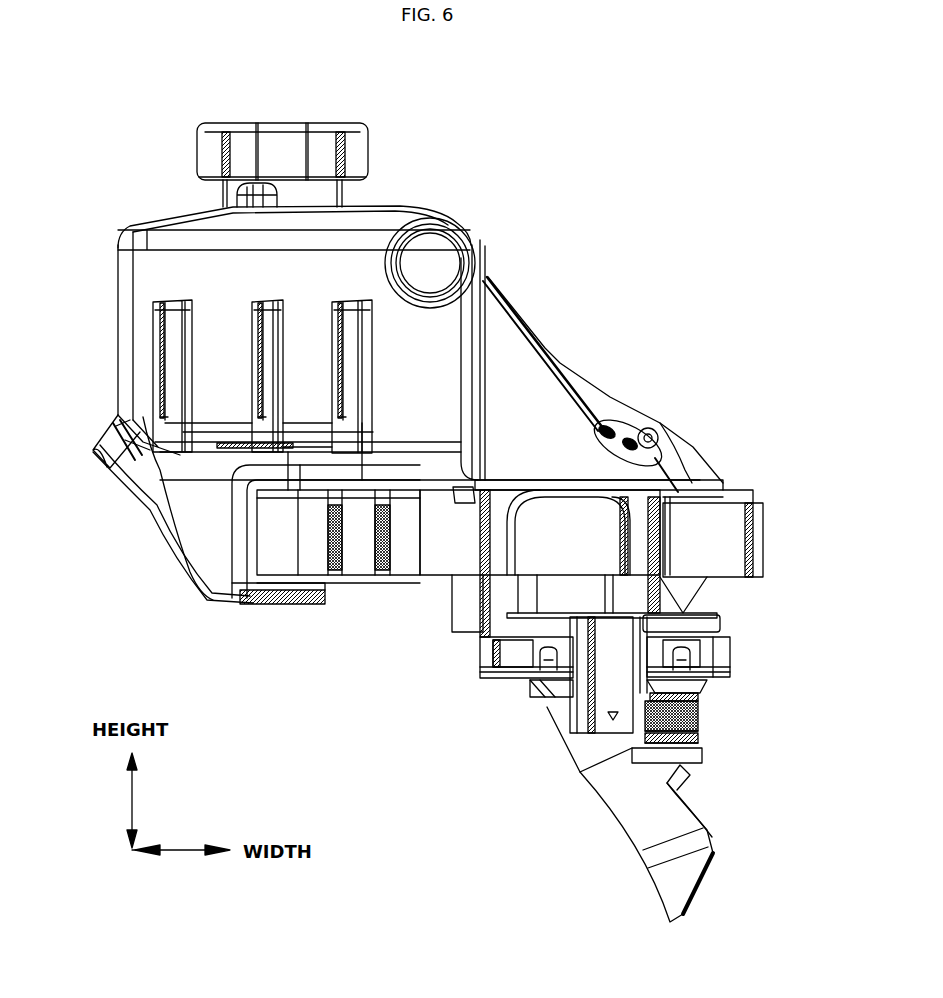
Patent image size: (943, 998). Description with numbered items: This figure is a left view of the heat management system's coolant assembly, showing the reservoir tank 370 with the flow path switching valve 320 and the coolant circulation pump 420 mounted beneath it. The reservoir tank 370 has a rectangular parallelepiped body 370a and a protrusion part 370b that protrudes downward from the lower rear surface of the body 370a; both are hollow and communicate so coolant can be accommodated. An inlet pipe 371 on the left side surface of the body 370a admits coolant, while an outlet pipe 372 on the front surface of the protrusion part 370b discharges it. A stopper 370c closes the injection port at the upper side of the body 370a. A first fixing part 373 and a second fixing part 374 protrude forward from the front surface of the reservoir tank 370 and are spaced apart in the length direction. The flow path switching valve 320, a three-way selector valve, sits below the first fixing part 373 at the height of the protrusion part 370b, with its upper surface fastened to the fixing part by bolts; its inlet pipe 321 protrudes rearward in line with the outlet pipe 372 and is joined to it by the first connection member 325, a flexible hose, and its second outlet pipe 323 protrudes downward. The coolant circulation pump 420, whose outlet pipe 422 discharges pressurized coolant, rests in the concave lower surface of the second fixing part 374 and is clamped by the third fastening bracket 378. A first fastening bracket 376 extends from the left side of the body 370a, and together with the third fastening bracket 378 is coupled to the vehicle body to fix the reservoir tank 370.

The stopper 370c is at (280, 138).
The body 370a is at (177, 257).
The reservoir tank 370 is at (412, 206).
The inlet pipe 371 is at (470, 252).
The first fastening bracket 376 is at (197, 450).
The protrusion part 370b is at (203, 560).
The outlet pipe 372 is at (278, 575).
The first connection member 325 is at (372, 580).
The inlet pipe 321 is at (450, 547).
The second outlet pipe 323 is at (727, 555).
The first fixing part 373 is at (533, 410).
The coolant circulation pump 420 is at (617, 445).
The second fixing part 374 is at (682, 470).
The flow path switching valve 320 is at (557, 690).
The outlet pipe 422 is at (687, 737).
The third fastening bracket 378 is at (632, 808).